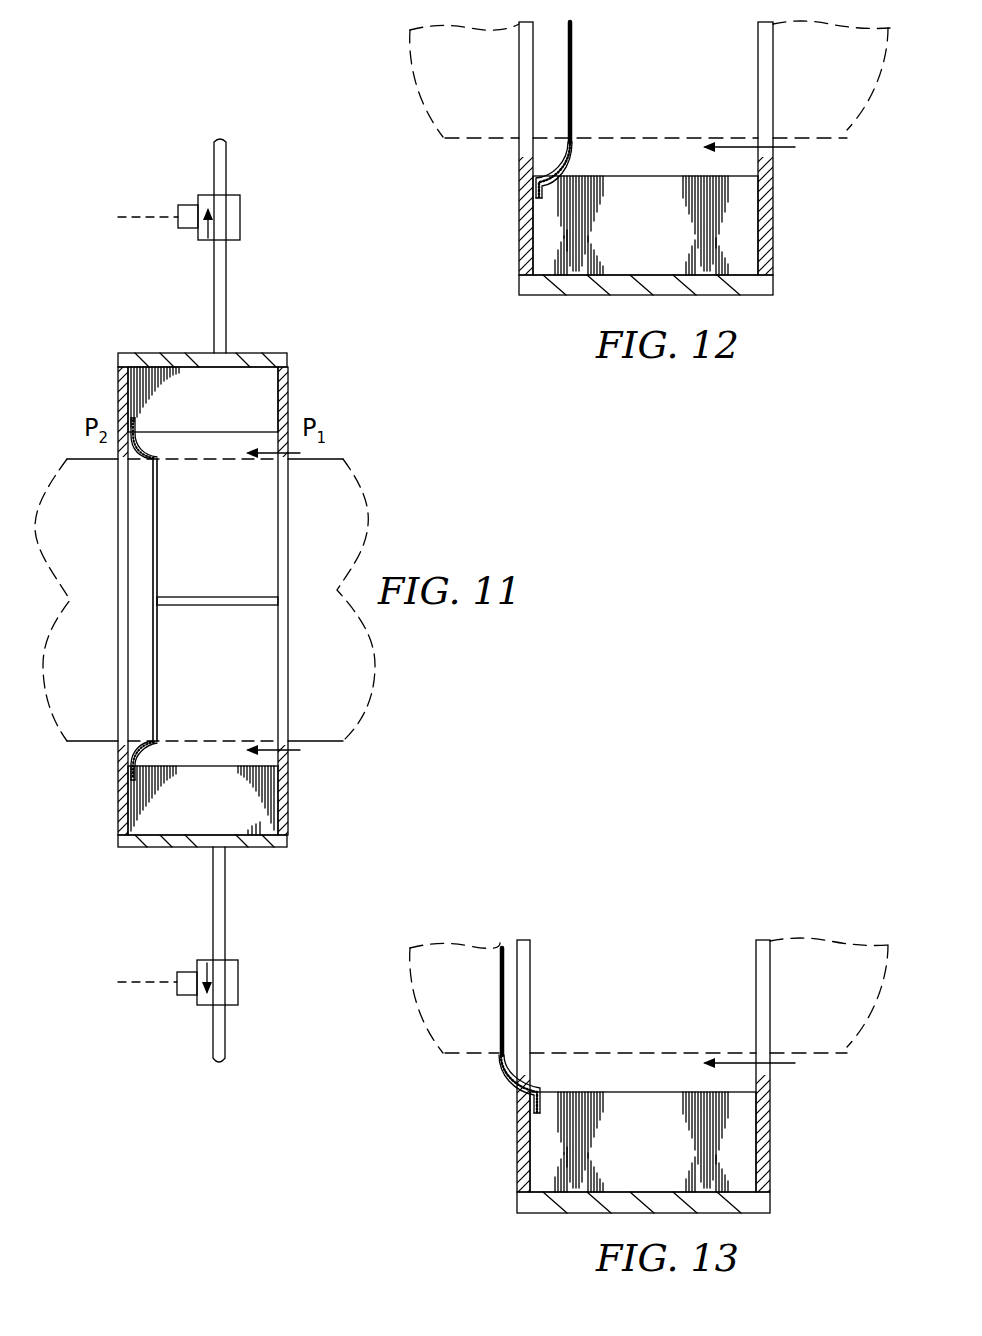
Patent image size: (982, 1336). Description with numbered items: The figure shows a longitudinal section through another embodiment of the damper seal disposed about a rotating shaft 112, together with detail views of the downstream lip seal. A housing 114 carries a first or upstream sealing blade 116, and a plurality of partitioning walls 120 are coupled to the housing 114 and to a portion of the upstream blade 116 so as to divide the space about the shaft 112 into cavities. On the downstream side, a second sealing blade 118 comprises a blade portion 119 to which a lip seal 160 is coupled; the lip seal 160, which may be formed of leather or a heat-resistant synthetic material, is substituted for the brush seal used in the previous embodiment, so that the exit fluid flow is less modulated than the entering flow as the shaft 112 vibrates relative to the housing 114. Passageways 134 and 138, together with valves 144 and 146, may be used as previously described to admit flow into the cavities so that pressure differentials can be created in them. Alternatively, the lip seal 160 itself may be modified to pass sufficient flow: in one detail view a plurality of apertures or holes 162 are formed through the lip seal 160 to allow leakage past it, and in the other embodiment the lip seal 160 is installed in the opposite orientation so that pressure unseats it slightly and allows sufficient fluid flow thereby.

In FIG. 11, the shaft 112 is at (331, 459).
In FIG. 12, the shaft 112 is at (856, 117).
In FIG. 13, the shaft 112 is at (856, 1034).
In FIG. 11, the housing 114 is at (180, 350).
In FIG. 12, the housing 114 is at (550, 297).
In FIG. 13, the housing 114 is at (570, 1214).
In FIG. 11, the first or upstream sealing blade 116 is at (288, 392).
In FIG. 12, the first or upstream sealing blade 116 is at (773, 218).
In FIG. 13, the first or upstream sealing blade 116 is at (770, 1135).
In FIG. 11, the second sealing blade 118 is at (86, 772).
In FIG. 12, the second sealing blade 118 is at (474, 196).
In FIG. 13, the second sealing blade 118 is at (474, 1111).
In FIG. 11, the blade portion 119 is at (118, 398).
In FIG. 12, the blade portion 119 is at (519, 230).
In FIG. 13, the blade portion 119 is at (517, 1152).
In FIG. 11, the partitioning walls 120 is at (236, 413).
In FIG. 12, the partitioning walls 120 is at (668, 233).
In FIG. 13, the partitioning walls 120 is at (666, 1150).
In FIG. 11, the passageway 134 is at (228, 290).
In FIG. 11, the passageway 138 is at (226, 906).
In FIG. 11, the valve 144 is at (240, 205).
In FIG. 11, the valve 146 is at (238, 998).
In FIG. 11, the lip seal 160 is at (152, 452).
In FIG. 12, the lip seal 160 is at (570, 130).
In FIG. 13, the lip seal 160 is at (538, 1092).
In FIG. 12, the apertures or holes 162 is at (560, 162).